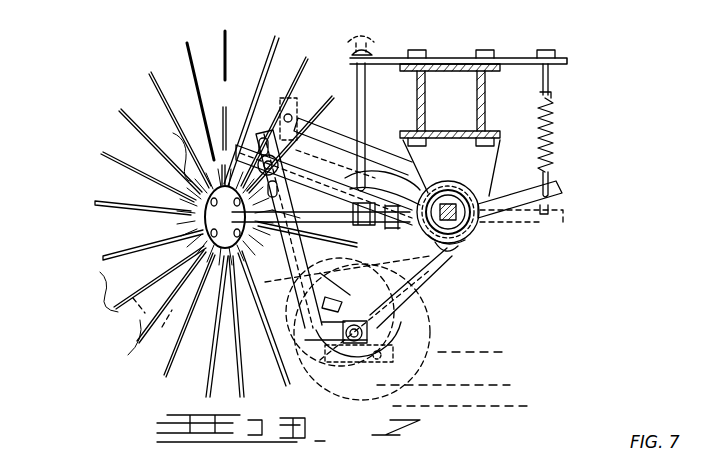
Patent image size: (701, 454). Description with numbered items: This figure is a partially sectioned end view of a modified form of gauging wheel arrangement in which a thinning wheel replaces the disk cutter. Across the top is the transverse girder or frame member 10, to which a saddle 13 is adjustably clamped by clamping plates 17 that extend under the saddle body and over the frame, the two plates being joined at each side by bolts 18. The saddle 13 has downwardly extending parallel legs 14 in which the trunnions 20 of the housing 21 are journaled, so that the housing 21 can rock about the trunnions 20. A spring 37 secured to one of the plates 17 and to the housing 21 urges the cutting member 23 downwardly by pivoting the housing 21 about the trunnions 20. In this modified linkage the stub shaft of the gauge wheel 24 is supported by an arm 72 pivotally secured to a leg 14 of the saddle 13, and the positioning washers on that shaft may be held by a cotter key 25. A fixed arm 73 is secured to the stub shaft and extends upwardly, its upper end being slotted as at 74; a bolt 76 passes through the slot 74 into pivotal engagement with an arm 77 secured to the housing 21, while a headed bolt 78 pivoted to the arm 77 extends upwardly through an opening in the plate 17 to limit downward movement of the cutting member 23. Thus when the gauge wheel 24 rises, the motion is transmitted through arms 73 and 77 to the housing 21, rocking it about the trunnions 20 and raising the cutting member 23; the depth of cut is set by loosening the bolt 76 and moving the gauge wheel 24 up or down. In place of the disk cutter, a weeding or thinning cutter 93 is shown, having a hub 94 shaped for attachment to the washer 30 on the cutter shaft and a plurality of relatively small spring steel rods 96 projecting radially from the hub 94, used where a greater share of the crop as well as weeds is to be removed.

The frame member 10 is at (455, 80).
The saddle 13 is at (485, 178).
The leg 14 is at (483, 222).
The clamping plate 17 is at (568, 50).
The bolt 18 is at (496, 98).
The trunnion 20 is at (436, 183).
The housing 21 is at (462, 258).
The cutting member 23 is at (128, 355).
The gauging wheel 24 is at (345, 370).
The cotter key 25 is at (170, 214).
The bolt 30 is at (180, 244).
The spring 37 is at (558, 126).
The arm 72 is at (413, 300).
The fixed arm 73 is at (272, 252).
The slot 74 is at (232, 155).
The bolt 76 is at (262, 128).
The arm 77 is at (385, 178).
The adjustment rod 78 is at (348, 70).
The thinning cutter 93 is at (128, 183).
The hub 94 is at (171, 153).
The spring steel rod 96 is at (100, 272).